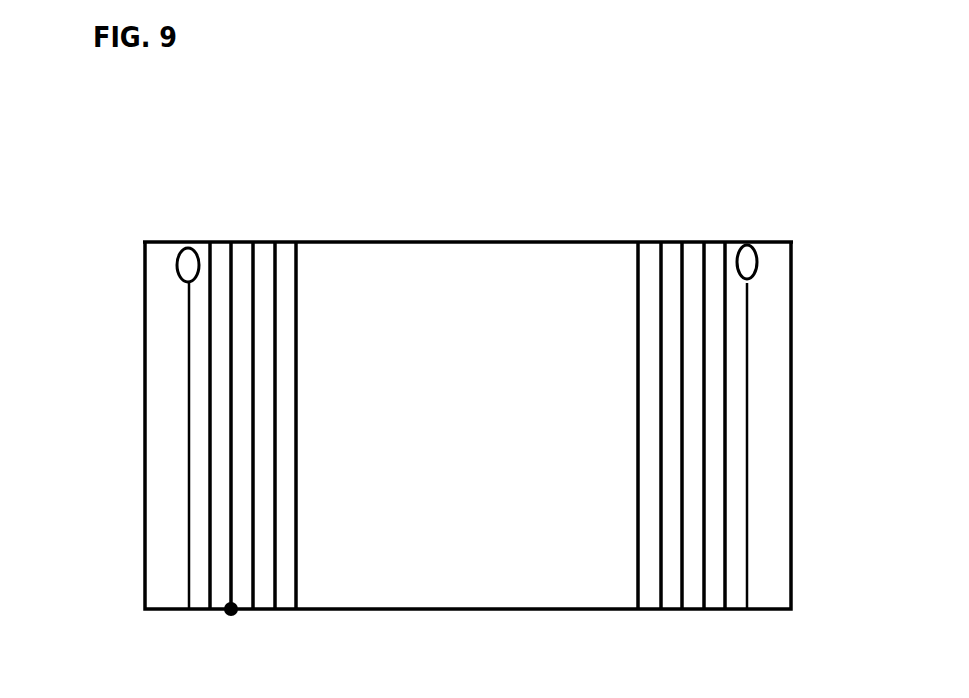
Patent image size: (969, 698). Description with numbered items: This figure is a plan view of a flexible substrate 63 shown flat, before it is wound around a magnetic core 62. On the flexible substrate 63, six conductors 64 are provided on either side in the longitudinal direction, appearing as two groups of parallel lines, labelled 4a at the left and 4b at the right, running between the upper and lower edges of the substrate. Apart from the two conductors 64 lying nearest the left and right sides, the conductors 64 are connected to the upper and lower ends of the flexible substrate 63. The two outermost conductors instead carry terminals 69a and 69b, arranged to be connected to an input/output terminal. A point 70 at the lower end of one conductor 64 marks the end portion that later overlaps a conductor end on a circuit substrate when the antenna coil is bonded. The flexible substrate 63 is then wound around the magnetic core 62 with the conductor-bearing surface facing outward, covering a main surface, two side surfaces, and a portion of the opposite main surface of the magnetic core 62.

The magnetic core 62 is at (773, 0).
The flexible substrate 63 is at (225, 242).
The conductors 64 is at (297, 325).
The first wiring group 4a is at (296, 616).
The second wiring group 4b is at (747, 616).
The terminal 69a is at (183, 270).
The terminal 69b is at (745, 262).
The point 70 is at (231, 607).